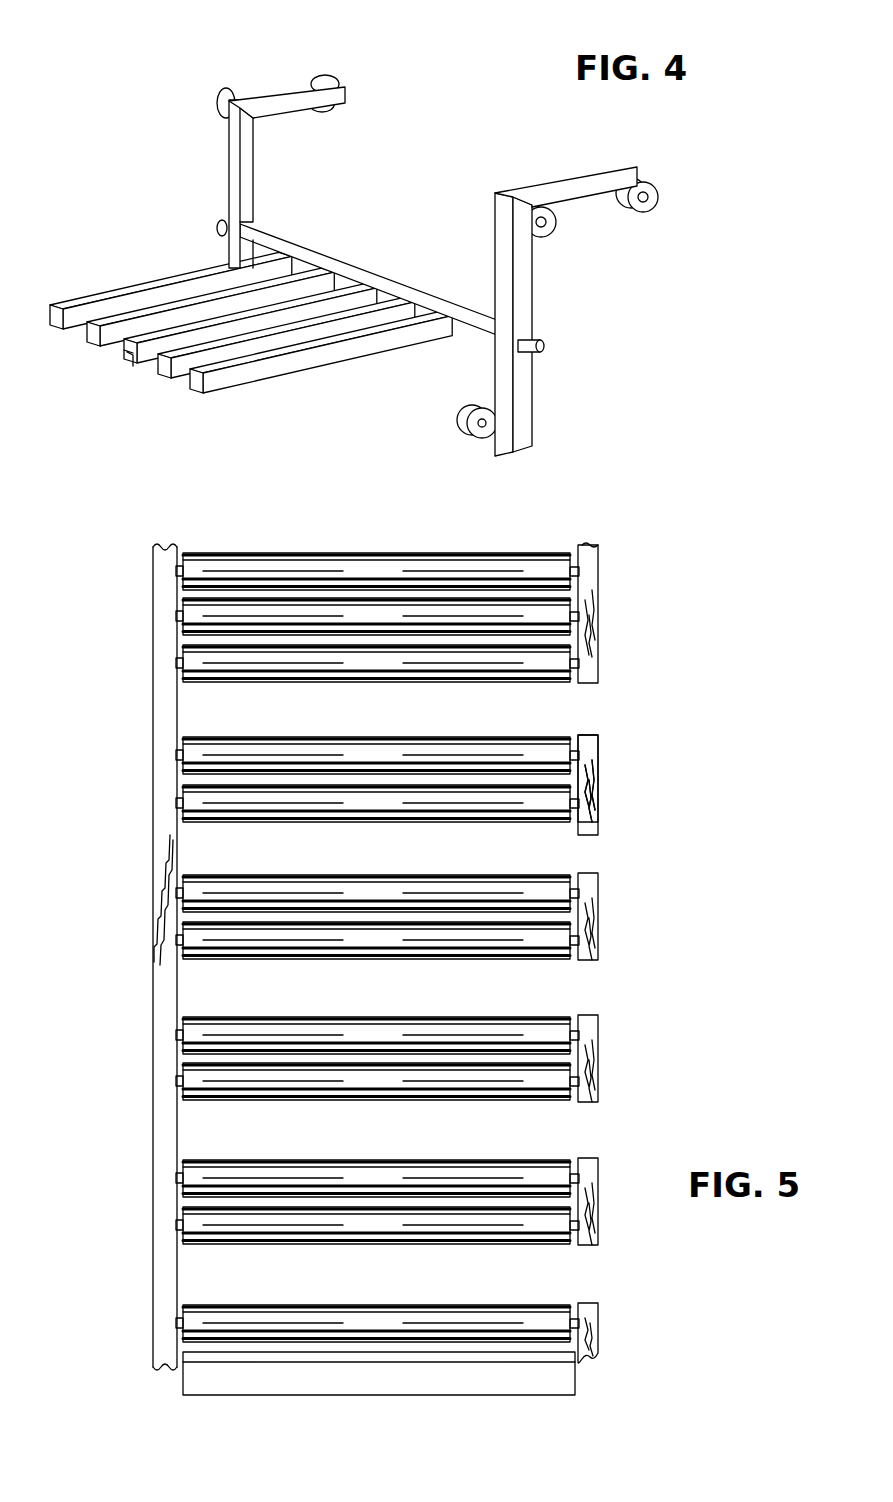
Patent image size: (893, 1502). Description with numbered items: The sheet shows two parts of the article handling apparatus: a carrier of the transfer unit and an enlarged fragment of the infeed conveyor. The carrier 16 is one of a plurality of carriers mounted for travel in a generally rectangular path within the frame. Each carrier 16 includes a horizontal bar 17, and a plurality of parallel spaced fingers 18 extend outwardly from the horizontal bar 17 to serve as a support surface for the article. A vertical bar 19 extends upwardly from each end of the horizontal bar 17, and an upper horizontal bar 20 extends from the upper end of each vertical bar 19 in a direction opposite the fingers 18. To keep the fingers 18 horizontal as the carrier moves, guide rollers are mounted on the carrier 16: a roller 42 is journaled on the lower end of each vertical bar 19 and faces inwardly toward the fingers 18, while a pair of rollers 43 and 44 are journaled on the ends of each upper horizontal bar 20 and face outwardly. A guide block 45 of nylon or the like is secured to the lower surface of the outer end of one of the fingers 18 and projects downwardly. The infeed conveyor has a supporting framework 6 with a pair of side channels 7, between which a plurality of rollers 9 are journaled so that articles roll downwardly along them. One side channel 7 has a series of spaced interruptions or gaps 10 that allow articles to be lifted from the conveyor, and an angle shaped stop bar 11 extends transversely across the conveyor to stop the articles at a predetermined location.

In FIG. 5, the supporting framework 6 is at (153, 770).
In FIG. 5, the side channels 7 is at (600, 650).
In FIG. 5, the rollers 9 is at (498, 657).
In FIG. 5, the interruptions or gaps 10 is at (590, 722).
In FIG. 5, the stop bar 11 is at (570, 1380).
In FIG. 4, the carrier 16 is at (404, 248).
In FIG. 4, the horizontal bar 17 is at (413, 290).
In FIG. 4, the fingers 18 is at (88, 334).
In FIG. 4, the vertical bar 19 is at (229, 163).
In FIG. 4, the upper horizontal bar 20 is at (276, 92).
In FIG. 4, the roller 42 is at (478, 436).
In FIG. 4, the roller 43 is at (221, 96).
In FIG. 4, the roller 44 is at (338, 80).
In FIG. 4, the guide block 45 is at (138, 380).